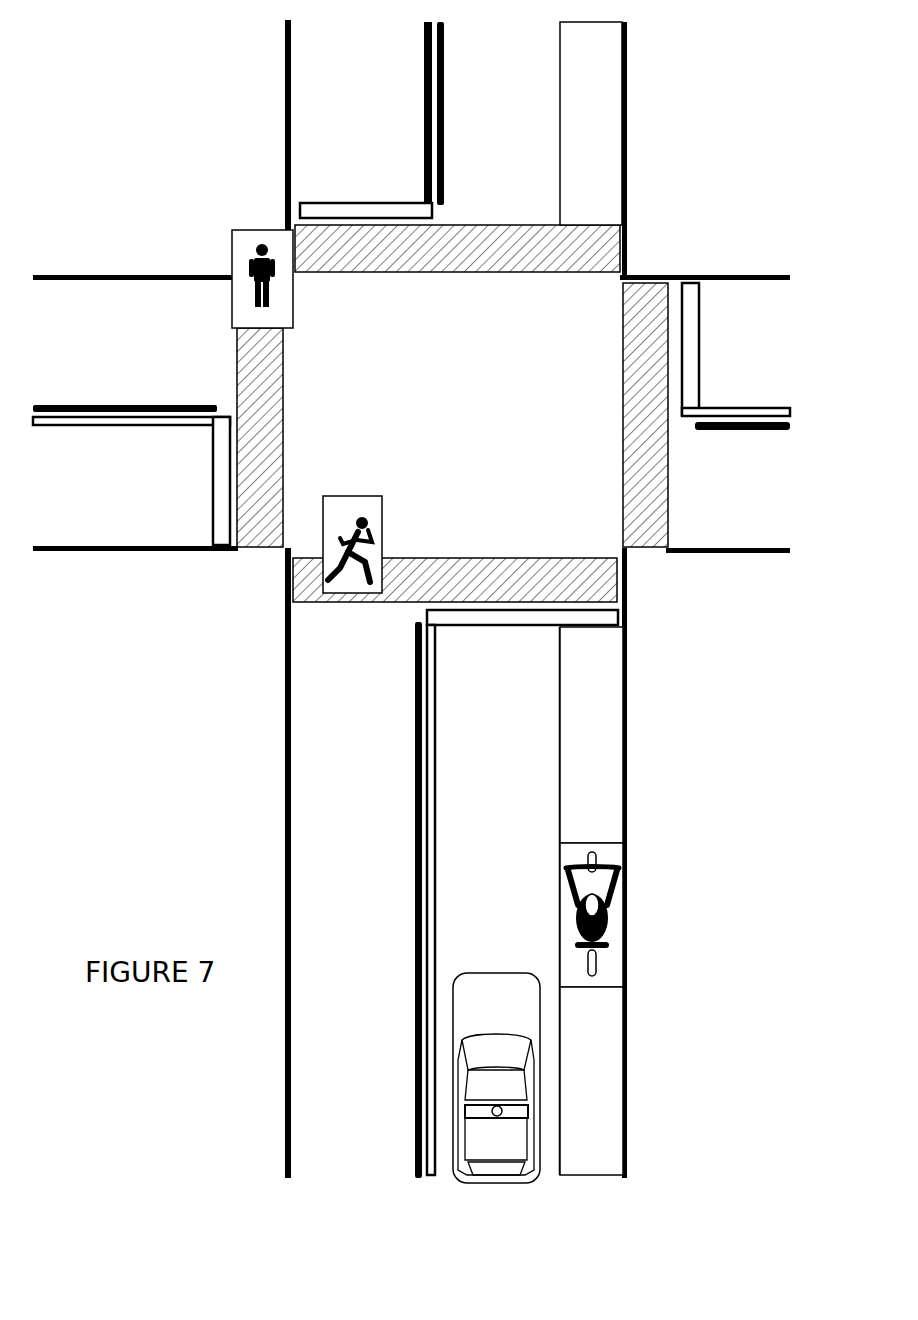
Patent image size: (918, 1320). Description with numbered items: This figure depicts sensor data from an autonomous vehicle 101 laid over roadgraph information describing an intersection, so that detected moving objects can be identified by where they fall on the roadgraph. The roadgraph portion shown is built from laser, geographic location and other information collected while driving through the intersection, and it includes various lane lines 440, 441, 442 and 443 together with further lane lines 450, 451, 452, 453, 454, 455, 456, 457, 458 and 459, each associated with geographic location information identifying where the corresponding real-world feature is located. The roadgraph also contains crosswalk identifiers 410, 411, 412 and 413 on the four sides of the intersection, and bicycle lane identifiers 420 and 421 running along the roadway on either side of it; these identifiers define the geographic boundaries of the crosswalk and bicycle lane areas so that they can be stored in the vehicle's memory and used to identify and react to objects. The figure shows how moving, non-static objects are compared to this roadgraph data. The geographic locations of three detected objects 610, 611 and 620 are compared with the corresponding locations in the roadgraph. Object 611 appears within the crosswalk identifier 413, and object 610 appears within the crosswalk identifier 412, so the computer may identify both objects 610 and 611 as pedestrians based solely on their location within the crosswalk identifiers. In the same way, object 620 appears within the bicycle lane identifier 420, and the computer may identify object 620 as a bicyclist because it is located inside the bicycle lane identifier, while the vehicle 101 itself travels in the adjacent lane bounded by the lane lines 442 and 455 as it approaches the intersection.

The autonomous vehicle 101 is at (540, 1150).
The crosswalk identifier 410 is at (622, 247).
The crosswalk identifier 411 is at (668, 523).
The crosswalk identifier 412 is at (292, 568).
The crosswalk identifier 413 is at (234, 513).
The bicycle lane identifier 420 is at (590, 823).
The bicycle lane identifier 421 is at (590, 37).
The lane line 440 is at (423, 107).
The lane line 441 is at (702, 407).
The lane line 442 is at (414, 750).
The lane line 443 is at (148, 407).
The lane line 450 is at (560, 87).
The lane line 451 is at (627, 78).
The lane line 452 is at (692, 277).
The lane line 453 is at (690, 552).
The lane line 454 is at (628, 679).
The lane line 455 is at (558, 695).
The lane line 456 is at (287, 719).
The lane line 457 is at (147, 548).
The lane line 458 is at (147, 277).
The lane line 459 is at (287, 73).
The object 610 is at (385, 542).
The object 611 is at (232, 272).
The object 620 is at (627, 936).